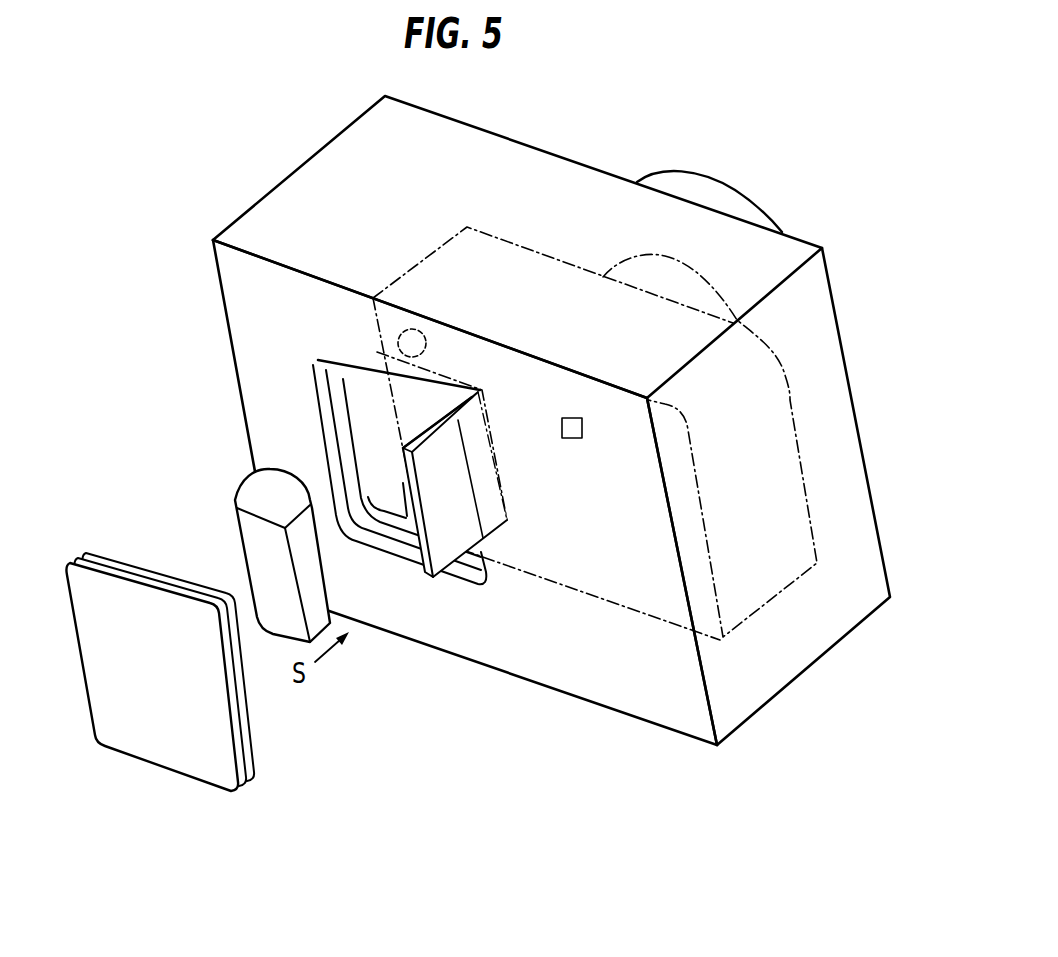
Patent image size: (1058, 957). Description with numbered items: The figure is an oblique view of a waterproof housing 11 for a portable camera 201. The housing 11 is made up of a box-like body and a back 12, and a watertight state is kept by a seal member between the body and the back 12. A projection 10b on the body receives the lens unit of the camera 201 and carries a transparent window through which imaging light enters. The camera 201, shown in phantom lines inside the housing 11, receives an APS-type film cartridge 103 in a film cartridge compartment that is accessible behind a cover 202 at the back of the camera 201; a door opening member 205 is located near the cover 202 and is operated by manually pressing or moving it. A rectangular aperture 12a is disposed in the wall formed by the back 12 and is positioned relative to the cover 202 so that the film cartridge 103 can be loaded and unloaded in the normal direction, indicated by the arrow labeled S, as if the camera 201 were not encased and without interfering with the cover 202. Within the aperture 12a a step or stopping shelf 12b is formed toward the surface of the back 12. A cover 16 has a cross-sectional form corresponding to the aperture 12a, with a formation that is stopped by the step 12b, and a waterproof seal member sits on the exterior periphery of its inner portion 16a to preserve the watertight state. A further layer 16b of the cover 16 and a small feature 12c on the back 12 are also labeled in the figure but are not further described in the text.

The projection 10b is at (702, 192).
The waterproof housing 11 is at (851, 630).
The back 12 is at (643, 688).
The aperture 12a is at (342, 404).
The step 12b is at (337, 437).
The indicator window 12c is at (572, 432).
The cover 16 is at (160, 727).
The inner portion 16a is at (255, 737).
The card layer 16b is at (84, 556).
The film cartridge 103 is at (258, 551).
The camera 201 is at (763, 607).
The cover 202 is at (450, 537).
The door opening member 205 is at (398, 343).